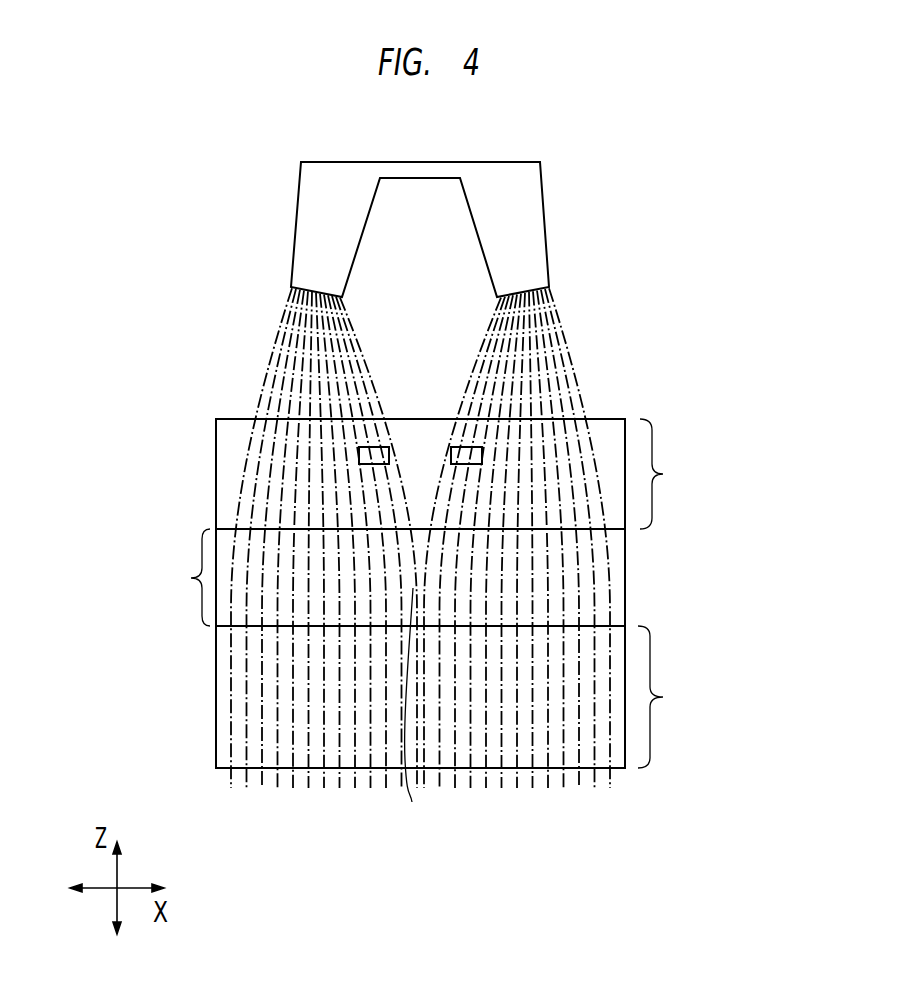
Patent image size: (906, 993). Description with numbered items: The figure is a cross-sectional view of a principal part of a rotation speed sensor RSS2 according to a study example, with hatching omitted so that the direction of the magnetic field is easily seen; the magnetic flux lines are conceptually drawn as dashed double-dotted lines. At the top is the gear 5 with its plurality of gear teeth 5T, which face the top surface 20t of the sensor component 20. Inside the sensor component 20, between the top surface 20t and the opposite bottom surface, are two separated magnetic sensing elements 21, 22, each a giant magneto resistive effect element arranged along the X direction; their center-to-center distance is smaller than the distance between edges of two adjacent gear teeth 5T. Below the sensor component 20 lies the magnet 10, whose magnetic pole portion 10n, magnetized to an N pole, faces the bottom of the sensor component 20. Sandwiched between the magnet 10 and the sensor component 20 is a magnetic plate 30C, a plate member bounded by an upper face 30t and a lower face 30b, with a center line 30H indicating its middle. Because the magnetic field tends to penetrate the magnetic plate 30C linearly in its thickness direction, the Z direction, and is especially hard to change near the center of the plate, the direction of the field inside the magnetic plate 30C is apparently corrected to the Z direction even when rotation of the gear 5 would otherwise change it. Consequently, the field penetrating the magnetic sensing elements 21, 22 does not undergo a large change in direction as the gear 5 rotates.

The gear 5 is at (408, 229).
The gear teeth 5T is at (302, 270).
The sensor component 20 is at (456, 474).
The top surface 20t is at (240, 419).
The magnetic sensing element 21 is at (365, 458).
The magnetic sensing element 22 is at (472, 455).
The top surface of intermediate layer 30t is at (225, 528).
The magnetic plate 30C is at (380, 577).
The bottom surface of intermediate layer 30b is at (225, 627).
The center line of intermediate layer 30H is at (422, 717).
The magnet 10 is at (491, 697).
The magnetic pole portion 10n is at (491, 697).
The rotation speed sensor RSS2 is at (182, 722).